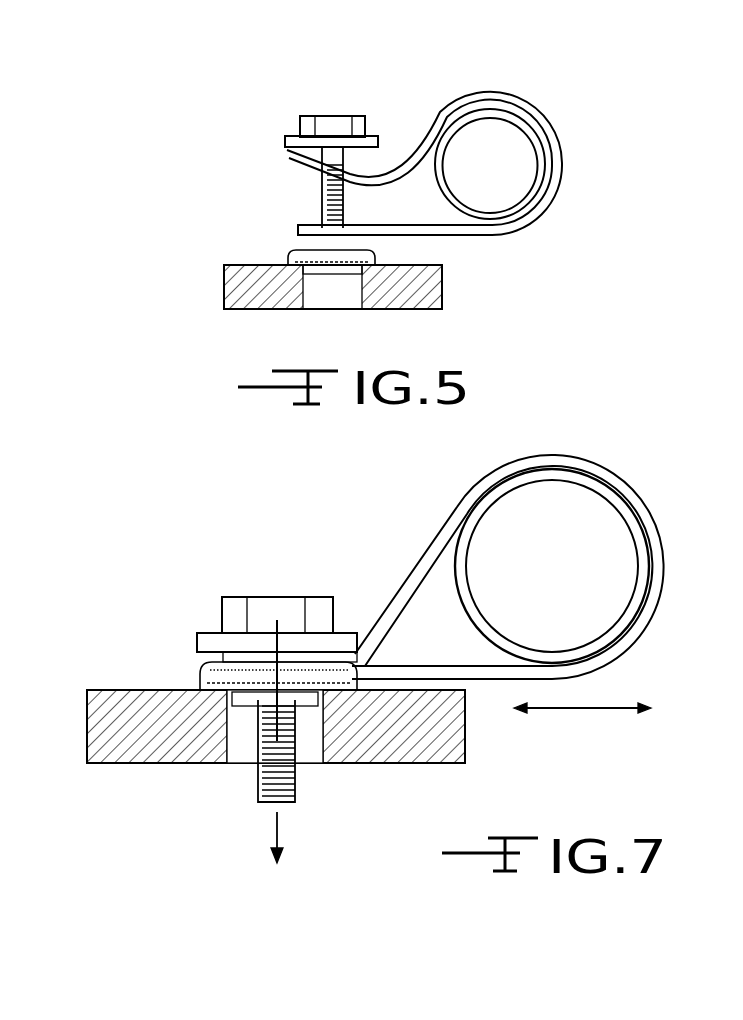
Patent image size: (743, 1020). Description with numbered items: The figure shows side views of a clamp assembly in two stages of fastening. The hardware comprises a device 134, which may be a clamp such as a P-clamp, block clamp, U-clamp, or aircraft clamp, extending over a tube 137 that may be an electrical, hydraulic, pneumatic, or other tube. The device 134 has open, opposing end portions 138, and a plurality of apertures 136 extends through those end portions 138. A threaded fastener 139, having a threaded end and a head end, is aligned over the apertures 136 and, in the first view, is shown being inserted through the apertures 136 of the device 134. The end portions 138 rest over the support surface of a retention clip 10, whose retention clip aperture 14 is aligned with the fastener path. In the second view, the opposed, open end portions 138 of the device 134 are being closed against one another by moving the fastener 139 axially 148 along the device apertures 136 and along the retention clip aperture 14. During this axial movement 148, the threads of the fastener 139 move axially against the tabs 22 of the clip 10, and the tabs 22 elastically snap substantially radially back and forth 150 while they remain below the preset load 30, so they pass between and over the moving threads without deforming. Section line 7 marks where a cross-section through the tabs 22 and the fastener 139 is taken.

In FIG. 7, the line 7- 7 is at (290, 625).
In FIG. 7, the clip 10 is at (205, 668).
In FIG. 7, the retention clip aperture 14 is at (330, 690).
In FIG. 7, the tabs 22 is at (237, 708).
In FIG. 7, the preset load 30 is at (297, 700).
In FIG. 5, the device 134 is at (415, 150).
In FIG. 7, the device 134 is at (433, 550).
In FIG. 5, the apertures 136 is at (320, 222).
In FIG. 7, the apertures 136 is at (243, 655).
In FIG. 5, the tube 137 is at (503, 165).
In FIG. 7, the tube 137 is at (573, 543).
In FIG. 7, the end portions 138 is at (333, 657).
In FIG. 5, the threaded fastener 139 is at (338, 130).
In FIG. 7, the threaded fastener 139 is at (280, 607).
In FIG. 7, the axial movement 148 is at (280, 826).
In FIG. 7, the radial back-and-forth movement 150 is at (595, 708).